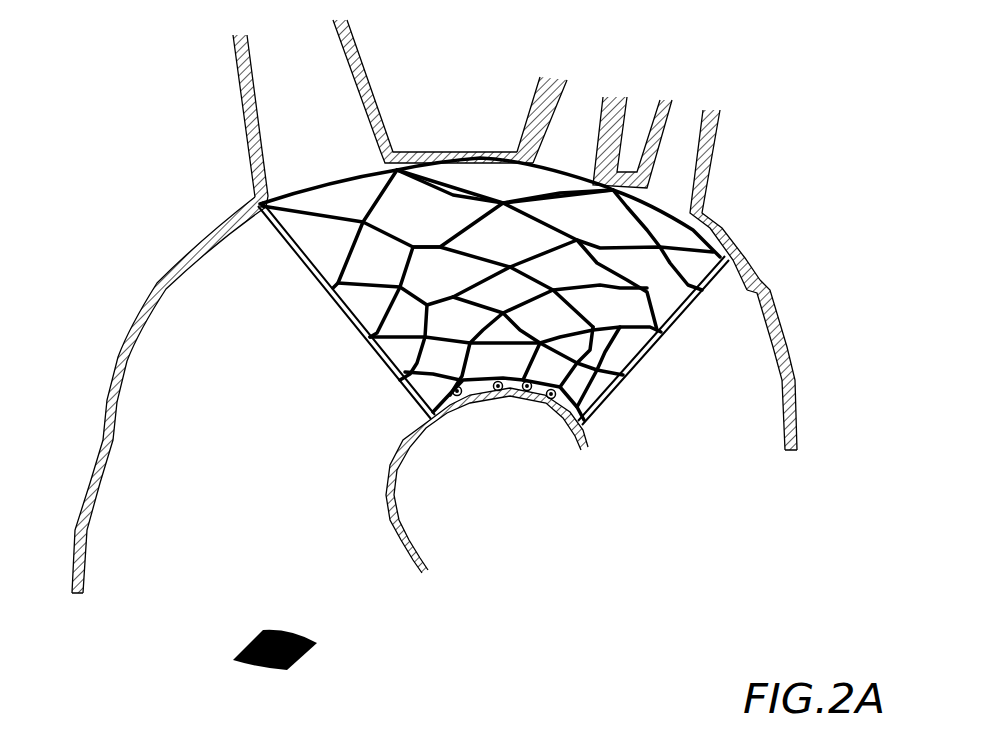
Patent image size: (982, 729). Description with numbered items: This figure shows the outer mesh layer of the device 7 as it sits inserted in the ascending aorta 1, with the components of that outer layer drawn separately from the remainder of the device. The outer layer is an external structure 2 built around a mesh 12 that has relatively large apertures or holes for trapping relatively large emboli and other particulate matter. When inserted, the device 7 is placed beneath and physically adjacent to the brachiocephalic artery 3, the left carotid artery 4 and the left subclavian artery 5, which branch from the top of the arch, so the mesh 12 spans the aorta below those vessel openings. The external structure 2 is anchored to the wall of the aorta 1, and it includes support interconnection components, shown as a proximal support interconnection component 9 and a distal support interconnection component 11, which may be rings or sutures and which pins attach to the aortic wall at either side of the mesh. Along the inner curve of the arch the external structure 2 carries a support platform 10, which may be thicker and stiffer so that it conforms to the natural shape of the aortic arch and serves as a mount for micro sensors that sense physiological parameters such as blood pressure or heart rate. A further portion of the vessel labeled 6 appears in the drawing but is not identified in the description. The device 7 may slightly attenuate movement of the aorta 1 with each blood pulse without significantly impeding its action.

The ascending aorta 1 is at (128, 550).
The external structure 2 is at (490, 237).
The brachiocephalic artery 3 is at (277, 35).
The left carotid artery 4 is at (578, 97).
The left subclavian artery 5 is at (683, 128).
The vessel wall (descending aorta) 6 is at (750, 373).
The device 7 is at (513, 337).
The proximal support interconnection component 9 is at (323, 284).
The support platform 10 is at (493, 437).
The distal support interconnection component 11 is at (713, 287).
The mesh 12 is at (640, 150).